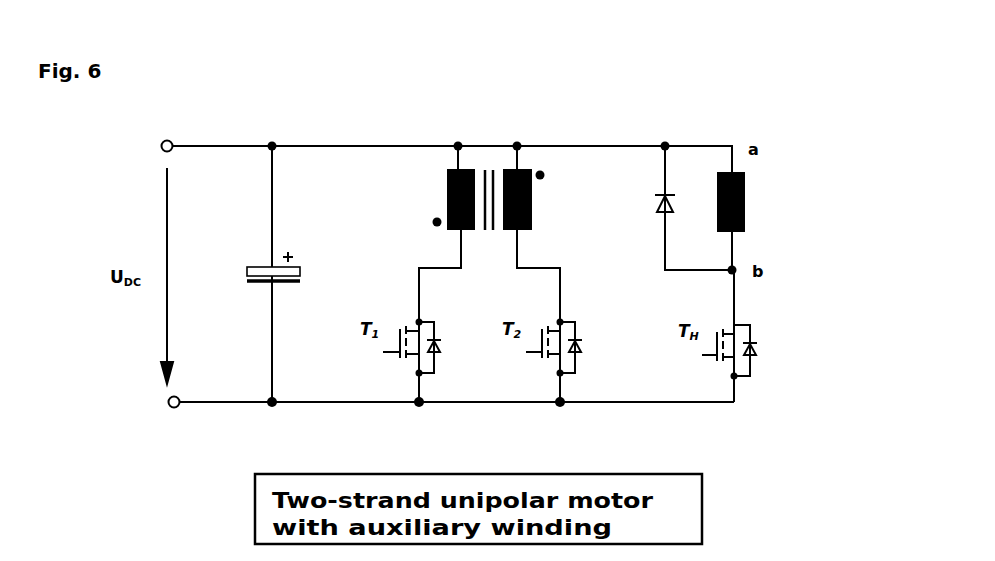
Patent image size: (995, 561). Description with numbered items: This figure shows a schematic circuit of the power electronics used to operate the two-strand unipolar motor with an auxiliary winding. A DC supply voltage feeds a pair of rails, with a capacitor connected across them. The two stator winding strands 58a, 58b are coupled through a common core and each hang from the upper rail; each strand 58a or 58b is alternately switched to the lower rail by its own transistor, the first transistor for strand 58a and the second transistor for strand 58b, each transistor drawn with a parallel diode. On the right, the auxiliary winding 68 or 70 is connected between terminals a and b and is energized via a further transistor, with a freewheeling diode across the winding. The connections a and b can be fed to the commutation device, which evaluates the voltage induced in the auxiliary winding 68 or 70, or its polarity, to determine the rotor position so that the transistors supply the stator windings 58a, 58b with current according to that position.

The strand 58a is at (436, 274).
The strand 58b is at (540, 274).
The auxiliary winding 68 is at (732, 234).
The auxiliary winding 70 is at (732, 234).